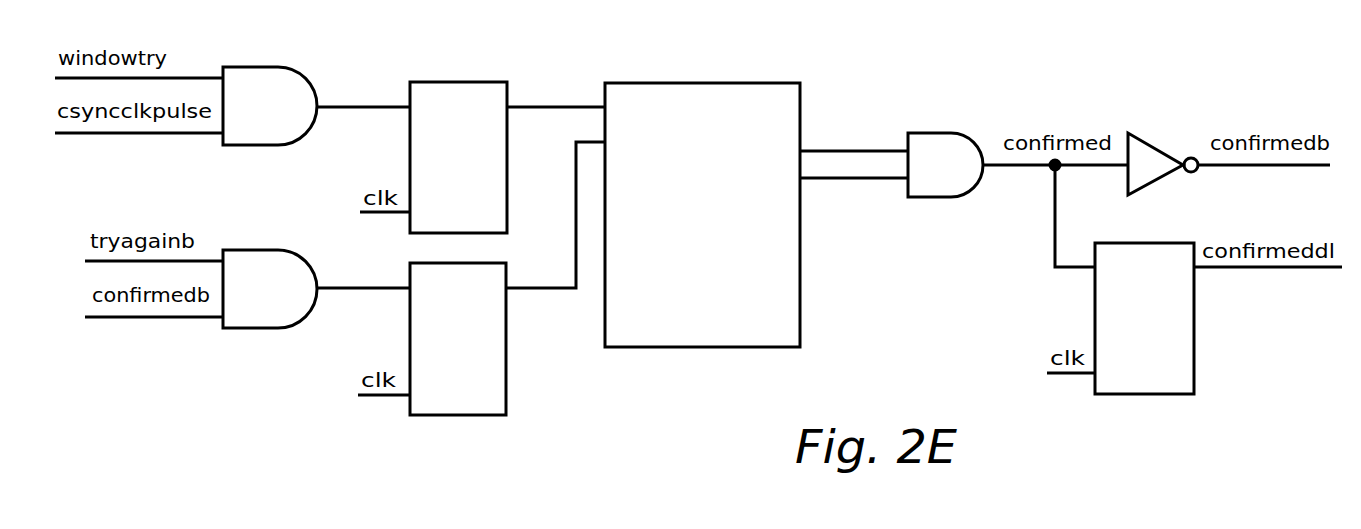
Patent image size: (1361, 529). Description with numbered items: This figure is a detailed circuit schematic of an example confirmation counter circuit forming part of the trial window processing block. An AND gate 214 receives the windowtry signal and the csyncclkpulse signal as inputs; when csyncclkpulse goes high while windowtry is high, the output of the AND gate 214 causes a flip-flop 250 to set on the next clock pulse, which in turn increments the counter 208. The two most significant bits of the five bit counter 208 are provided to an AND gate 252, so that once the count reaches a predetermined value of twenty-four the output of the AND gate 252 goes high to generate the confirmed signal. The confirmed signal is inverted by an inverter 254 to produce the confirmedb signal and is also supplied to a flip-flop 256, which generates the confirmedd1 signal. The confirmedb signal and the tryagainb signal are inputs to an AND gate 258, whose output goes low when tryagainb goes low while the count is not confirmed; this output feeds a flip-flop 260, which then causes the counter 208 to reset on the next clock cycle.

The AND gate 214 is at (253, 67).
The flip-flop 250 is at (462, 82).
The counter 208 is at (685, 83).
The AND gate 252 is at (930, 133).
The inverter 254 is at (1160, 146).
The flip-flop 256 is at (1194, 331).
The AND gate 258 is at (268, 328).
The flip-flop 260 is at (506, 393).